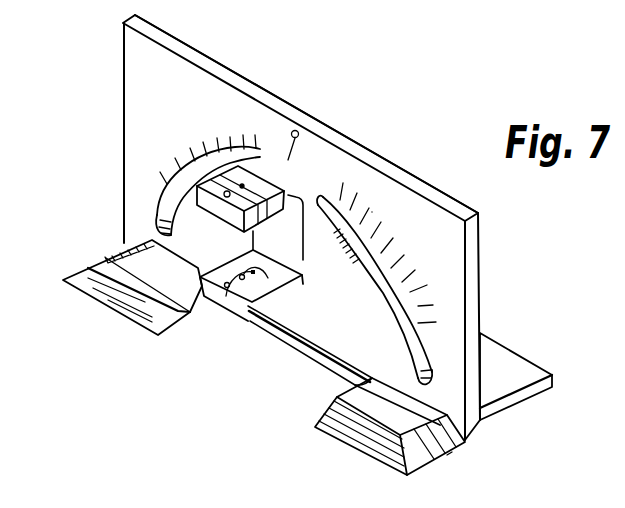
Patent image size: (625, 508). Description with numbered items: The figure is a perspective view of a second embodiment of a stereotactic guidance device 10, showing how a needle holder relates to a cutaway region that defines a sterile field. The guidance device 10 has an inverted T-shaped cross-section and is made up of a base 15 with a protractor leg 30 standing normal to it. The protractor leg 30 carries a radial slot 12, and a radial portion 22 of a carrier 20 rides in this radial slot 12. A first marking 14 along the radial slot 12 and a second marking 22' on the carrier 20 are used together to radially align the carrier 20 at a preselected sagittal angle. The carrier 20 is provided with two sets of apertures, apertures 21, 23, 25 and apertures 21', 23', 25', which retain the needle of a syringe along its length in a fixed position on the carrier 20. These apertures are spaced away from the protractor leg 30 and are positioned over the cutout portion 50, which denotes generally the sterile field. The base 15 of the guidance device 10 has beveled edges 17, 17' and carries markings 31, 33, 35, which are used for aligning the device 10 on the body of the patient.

The guidance device 10 is at (207, 49).
The radial slot 12 is at (161, 189).
The first marking 14 is at (372, 212).
The base 15 is at (538, 374).
The beveled edge 17 is at (390, 443).
The beveled edge 17' is at (107, 287).
The carrier 20 is at (313, 168).
The aperture 21 is at (305, 120).
The aperture 21' is at (281, 293).
The radial portion 22 is at (375, 290).
The second marking 22' is at (360, 143).
The aperture 23 is at (227, 144).
The aperture 23' is at (271, 337).
The aperture 25 is at (213, 148).
The aperture 25' is at (234, 334).
The protractor leg 30 is at (475, 292).
The marking 31 is at (465, 445).
The marking 33 is at (448, 455).
The marking 35 is at (347, 443).
The cutout portion 50 is at (175, 160).